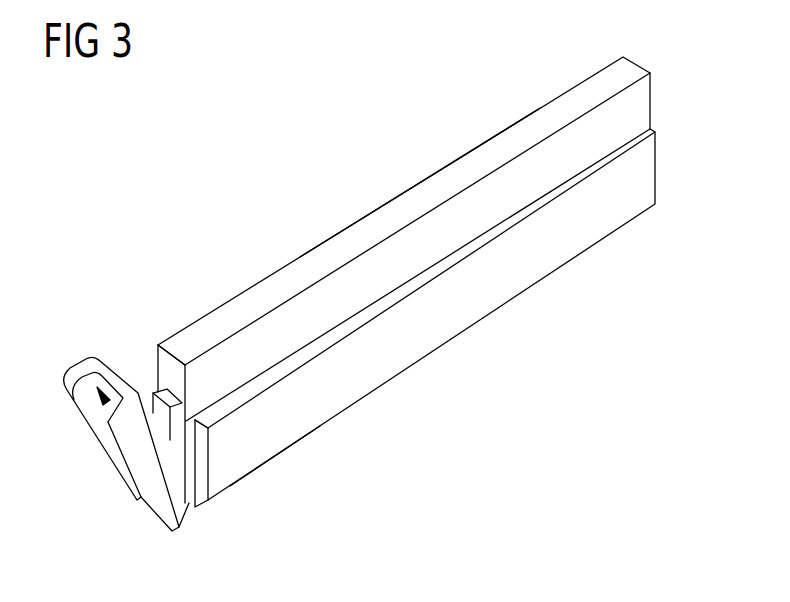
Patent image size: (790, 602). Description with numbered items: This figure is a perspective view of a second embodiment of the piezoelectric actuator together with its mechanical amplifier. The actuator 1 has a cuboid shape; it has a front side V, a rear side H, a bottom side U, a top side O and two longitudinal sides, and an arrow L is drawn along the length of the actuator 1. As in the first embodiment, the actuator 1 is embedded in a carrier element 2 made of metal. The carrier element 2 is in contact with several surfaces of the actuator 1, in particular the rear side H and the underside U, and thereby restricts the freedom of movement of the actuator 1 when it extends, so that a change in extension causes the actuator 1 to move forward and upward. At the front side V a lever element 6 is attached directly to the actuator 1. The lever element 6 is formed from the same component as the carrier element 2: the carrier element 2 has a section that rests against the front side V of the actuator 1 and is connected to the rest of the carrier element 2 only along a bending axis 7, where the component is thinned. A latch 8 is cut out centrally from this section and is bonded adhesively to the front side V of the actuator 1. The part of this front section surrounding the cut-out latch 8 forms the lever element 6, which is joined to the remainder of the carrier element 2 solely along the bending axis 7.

The actuator 1 is at (523, 128).
The carrier element 2 is at (645, 172).
The lever element 6 is at (92, 412).
The bending axis 7 is at (190, 512).
The latch 8 is at (157, 400).
The top side O is at (406, 203).
The bottom side U is at (268, 462).
The front side V is at (170, 366).
The rear side H is at (650, 93).
The length direction L is at (630, 287).